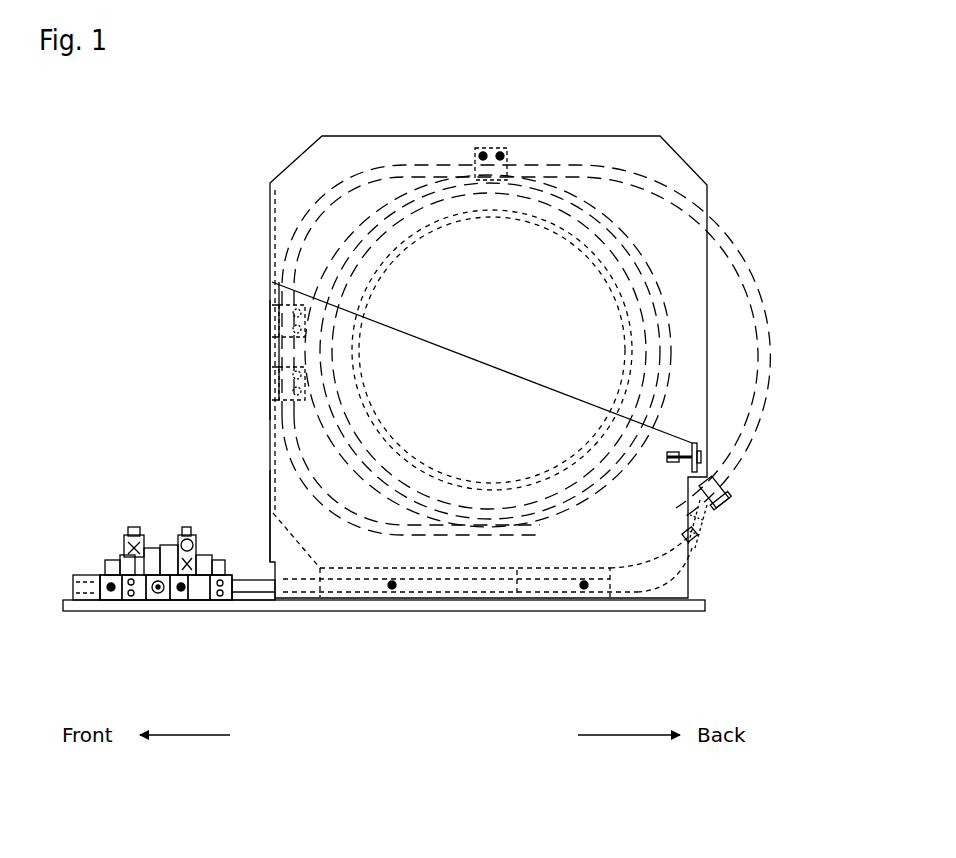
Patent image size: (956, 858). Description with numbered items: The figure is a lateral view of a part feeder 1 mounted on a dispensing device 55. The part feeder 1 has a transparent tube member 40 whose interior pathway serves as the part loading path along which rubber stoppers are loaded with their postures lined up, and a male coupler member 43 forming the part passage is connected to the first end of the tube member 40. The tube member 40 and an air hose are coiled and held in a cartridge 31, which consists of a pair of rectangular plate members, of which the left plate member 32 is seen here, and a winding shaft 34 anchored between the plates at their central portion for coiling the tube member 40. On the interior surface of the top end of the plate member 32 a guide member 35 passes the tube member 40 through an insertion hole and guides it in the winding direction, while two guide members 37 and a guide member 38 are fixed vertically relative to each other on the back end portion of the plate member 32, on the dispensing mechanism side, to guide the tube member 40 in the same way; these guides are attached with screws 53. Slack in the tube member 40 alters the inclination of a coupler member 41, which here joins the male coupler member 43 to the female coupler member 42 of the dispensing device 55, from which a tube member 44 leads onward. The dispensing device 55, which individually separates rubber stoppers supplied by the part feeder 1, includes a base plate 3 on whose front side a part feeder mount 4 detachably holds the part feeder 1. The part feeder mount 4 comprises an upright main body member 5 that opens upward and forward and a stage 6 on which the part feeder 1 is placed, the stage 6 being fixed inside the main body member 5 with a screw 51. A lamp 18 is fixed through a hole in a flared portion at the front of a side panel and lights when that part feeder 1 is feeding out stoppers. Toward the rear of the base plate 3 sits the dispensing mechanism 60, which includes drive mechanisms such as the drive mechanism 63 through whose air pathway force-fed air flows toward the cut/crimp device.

The part feeder 1 is at (577, 124).
The base plate 3 is at (262, 606).
The part feeder mount 4 is at (250, 473).
The main body member 5 is at (347, 556).
The stage 6 is at (517, 571).
The lamp 18 is at (688, 467).
The cartridge 31 is at (488, 343).
The plate member 32 is at (632, 148).
The winding shaft 34 is at (450, 212).
The guide member 35 is at (492, 148).
The guide member 37 is at (283, 312).
The guide member 38 is at (285, 380).
The tube member 40 is at (766, 262).
The coupler member 41 is at (780, 484).
The female coupler member 42 is at (698, 528).
The male coupler member 43 is at (723, 500).
The tube member 44 is at (636, 595).
The screw 51 is at (392, 590).
The screw 53 is at (481, 153).
The dispensing device 55 is at (138, 341).
The dispensing mechanism 60 is at (110, 523).
The drive mechanism 63 is at (172, 606).